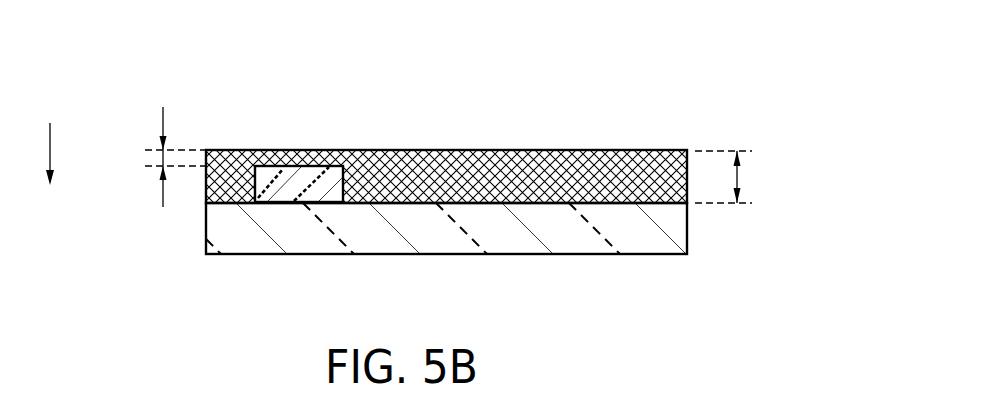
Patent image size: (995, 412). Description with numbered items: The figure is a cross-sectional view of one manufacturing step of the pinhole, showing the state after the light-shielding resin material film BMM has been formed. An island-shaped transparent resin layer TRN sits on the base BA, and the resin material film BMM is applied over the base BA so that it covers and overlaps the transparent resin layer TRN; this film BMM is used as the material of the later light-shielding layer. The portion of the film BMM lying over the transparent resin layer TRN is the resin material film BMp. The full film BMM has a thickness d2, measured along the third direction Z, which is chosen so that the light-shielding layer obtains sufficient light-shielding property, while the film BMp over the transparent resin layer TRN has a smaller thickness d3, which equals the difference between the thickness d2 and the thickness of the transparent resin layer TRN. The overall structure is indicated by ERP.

The electrophoretic display panel ERP is at (431, 153).
The light-shielding resin material film BMM is at (493, 163).
The resin material film BMp is at (313, 163).
The transparent resin layer TRN is at (283, 177).
The base BA is at (518, 242).
The thickness of the resin material film BMM d2 is at (736, 177).
The thickness of the resin material film BMp d3 is at (157, 157).
The third direction Z is at (50, 172).